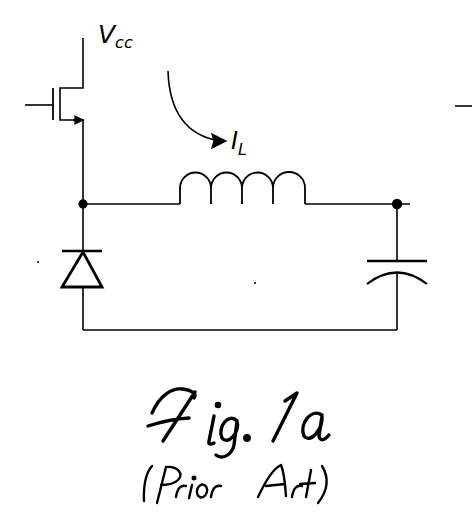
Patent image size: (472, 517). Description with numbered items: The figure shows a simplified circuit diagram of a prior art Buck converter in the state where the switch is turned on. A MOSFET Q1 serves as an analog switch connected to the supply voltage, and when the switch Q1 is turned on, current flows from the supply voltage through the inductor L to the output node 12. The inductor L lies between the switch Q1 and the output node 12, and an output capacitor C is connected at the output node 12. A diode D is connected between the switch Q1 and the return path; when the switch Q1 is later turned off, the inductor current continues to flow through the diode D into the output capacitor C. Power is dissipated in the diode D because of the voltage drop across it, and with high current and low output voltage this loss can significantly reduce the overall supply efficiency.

The output node 12 is at (397, 201).
The MOSFET Q1 is at (77, 121).
The inductor L is at (242, 204).
The output capacitor C is at (412, 267).
The diode D is at (100, 267).